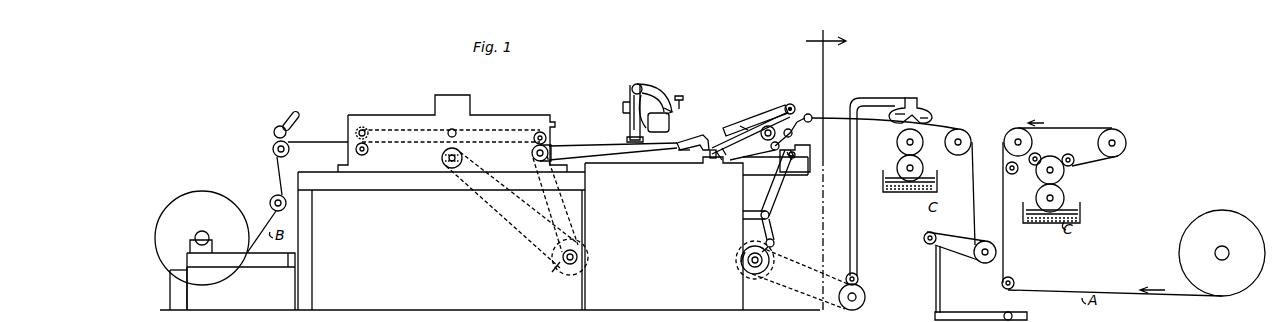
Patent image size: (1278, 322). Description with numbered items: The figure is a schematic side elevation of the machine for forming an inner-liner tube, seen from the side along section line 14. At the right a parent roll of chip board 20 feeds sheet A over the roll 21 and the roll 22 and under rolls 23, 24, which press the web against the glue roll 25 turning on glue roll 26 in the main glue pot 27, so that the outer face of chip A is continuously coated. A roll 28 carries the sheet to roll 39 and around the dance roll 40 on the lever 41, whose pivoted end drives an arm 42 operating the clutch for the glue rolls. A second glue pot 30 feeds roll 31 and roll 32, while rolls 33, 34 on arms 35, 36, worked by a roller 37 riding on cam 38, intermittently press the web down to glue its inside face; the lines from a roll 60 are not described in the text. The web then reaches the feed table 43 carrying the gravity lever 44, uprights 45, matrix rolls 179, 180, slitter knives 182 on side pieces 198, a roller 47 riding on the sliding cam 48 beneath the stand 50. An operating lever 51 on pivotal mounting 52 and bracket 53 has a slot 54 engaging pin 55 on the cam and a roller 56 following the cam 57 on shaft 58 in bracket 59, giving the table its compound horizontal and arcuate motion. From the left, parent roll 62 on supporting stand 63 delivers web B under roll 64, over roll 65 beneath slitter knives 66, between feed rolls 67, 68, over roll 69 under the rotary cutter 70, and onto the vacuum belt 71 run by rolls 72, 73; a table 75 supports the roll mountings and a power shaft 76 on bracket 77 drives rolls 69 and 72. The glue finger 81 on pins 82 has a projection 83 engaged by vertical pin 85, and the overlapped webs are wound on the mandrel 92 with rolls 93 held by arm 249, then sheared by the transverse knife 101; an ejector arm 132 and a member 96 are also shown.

The section line 14 is at (829, 165).
The parent roll of chip board 20 is at (1222, 260).
The roll 21 is at (1010, 290).
The roll 22 is at (1006, 173).
The roll 23 is at (1040, 154).
The roll 24 is at (1071, 154).
The glue roll 25 is at (1040, 176).
The glue roll 26 is at (1037, 194).
The main glue pot 27 is at (1082, 208).
The roll 28 is at (1126, 146).
The second glue pot 30 is at (900, 192).
The roll 31 is at (922, 164).
The roll 32 is at (896, 142).
The roll 33 is at (895, 115).
The roll 34 is at (933, 118).
The arm 35 is at (918, 105).
The arm 36 is at (858, 210).
The roller 37 is at (860, 276).
The cam 38 is at (866, 297).
The roll 39 is at (1018, 128).
The dance roll 40 is at (986, 262).
The lever 41 is at (962, 250).
The arm 42 is at (972, 312).
The feed table 43 is at (813, 115).
The gravity lever 44 is at (722, 140).
The uprights 45 is at (796, 104).
The roller 47 is at (765, 160).
The sliding cam 48 is at (810, 150).
The stand 50 is at (712, 232).
The operating lever 51 is at (784, 196).
The pivotal mounting 52 is at (770, 216).
The bracket 53 is at (776, 176).
The slot 54 is at (790, 183).
The pin 55 is at (798, 162).
The roller 56 is at (776, 242).
The cam 57 is at (770, 265).
The shaft 58 is at (760, 275).
The bracket 59 is at (746, 258).
The guide roller 60 is at (968, 134).
The parent roll 62 is at (200, 197).
The supporting stand 63 is at (242, 260).
The roll 64 is at (271, 198).
The roll 65 is at (290, 150).
The slitter knives 66 is at (284, 124).
The feed roll 67 is at (369, 152).
The feed roll 68 is at (366, 127).
The roll 69 is at (443, 158).
The rotary cutter 70 is at (452, 129).
The vacuum belt 71 is at (588, 146).
The roll 72 is at (531, 156).
The roll 73 is at (547, 136).
The table 75 is at (404, 190).
The power shaft 76 is at (580, 258).
The bracket 77 is at (563, 275).
The glue finger 81 is at (692, 134).
The pins 82 is at (705, 152).
The projection 83 is at (726, 157).
The vertical pin 85 is at (713, 160).
The mandrel 92 is at (663, 132).
The rolls 93 is at (671, 108).
The rod 96 is at (935, 281).
The transverse knife 101 is at (687, 106).
The ejector arm 132 is at (632, 112).
The matrix roll 179 is at (774, 127).
The matrix roll 180 is at (751, 133).
The slitter knives 182 is at (768, 126).
The side pieces 198 is at (748, 126).
The arm 249 is at (660, 85).